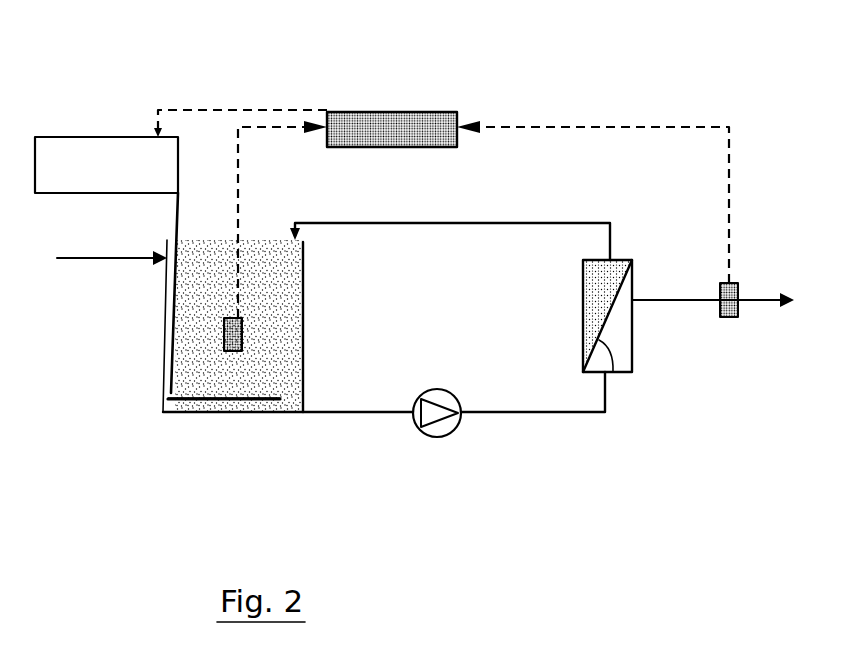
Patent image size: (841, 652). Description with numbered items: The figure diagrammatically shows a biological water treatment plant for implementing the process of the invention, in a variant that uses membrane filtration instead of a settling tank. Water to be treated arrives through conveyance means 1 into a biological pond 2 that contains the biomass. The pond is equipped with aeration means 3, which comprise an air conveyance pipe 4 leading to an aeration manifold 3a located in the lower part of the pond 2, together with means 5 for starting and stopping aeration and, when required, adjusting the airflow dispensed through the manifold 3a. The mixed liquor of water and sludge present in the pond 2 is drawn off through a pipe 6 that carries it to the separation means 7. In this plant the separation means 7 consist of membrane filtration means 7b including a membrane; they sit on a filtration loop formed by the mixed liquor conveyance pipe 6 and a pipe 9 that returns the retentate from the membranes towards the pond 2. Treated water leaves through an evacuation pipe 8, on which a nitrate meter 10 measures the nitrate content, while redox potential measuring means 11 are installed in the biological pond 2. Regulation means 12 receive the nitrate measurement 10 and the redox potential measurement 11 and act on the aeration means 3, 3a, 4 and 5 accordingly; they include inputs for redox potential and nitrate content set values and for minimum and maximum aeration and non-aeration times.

The conveyance means 1 is at (118, 262).
The biological pond 2 is at (305, 372).
The aeration means 3 is at (243, 414).
The aeration manifold 3a is at (233, 396).
The air conveyance pipe 4 is at (173, 208).
The means of starting and stopping aeration 5 is at (146, 173).
The mixed liquor conveyance pipe 6 is at (500, 418).
The separation means 7 is at (622, 258).
The membrane filtration means 7b is at (615, 373).
The evacuation pipe 8 is at (670, 303).
The retentate return pipe 9 is at (475, 223).
The nitrate content measuring means 10 is at (738, 287).
The redox potential measuring means 11 is at (245, 326).
The regulation means 12 is at (433, 125).